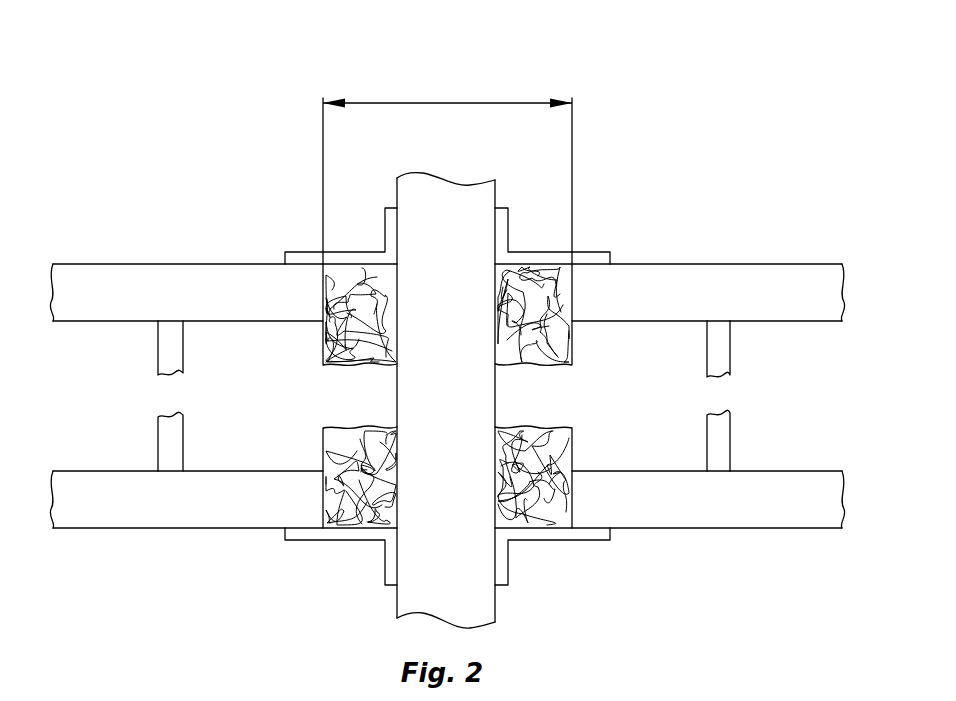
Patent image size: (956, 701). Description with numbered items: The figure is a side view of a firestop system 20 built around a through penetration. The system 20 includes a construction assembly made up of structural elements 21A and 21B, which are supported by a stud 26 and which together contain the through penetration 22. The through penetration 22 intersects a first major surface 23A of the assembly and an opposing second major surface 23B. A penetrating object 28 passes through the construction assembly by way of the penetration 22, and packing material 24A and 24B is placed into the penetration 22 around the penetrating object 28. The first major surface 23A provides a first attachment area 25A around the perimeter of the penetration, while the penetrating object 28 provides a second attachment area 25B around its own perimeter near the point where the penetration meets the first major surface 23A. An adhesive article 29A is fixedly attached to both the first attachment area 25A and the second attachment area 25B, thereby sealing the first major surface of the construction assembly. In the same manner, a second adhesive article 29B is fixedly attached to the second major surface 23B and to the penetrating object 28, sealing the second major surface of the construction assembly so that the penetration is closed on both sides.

The system 20 is at (724, 180).
The structural element 21A is at (188, 278).
The structural element 21B is at (198, 515).
The through penetration 22 is at (440, 102).
The first major surface 23A is at (100, 262).
The second major surface 23B is at (98, 528).
The packing material 24A is at (327, 335).
The packing material 24B is at (327, 442).
The first attachment area 25A is at (307, 265).
The second attachment area 25B is at (493, 220).
The stud 26 is at (165, 360).
The penetrating object 28 is at (482, 403).
The adhesive article 29A is at (297, 255).
The adhesive article 29B is at (330, 533).